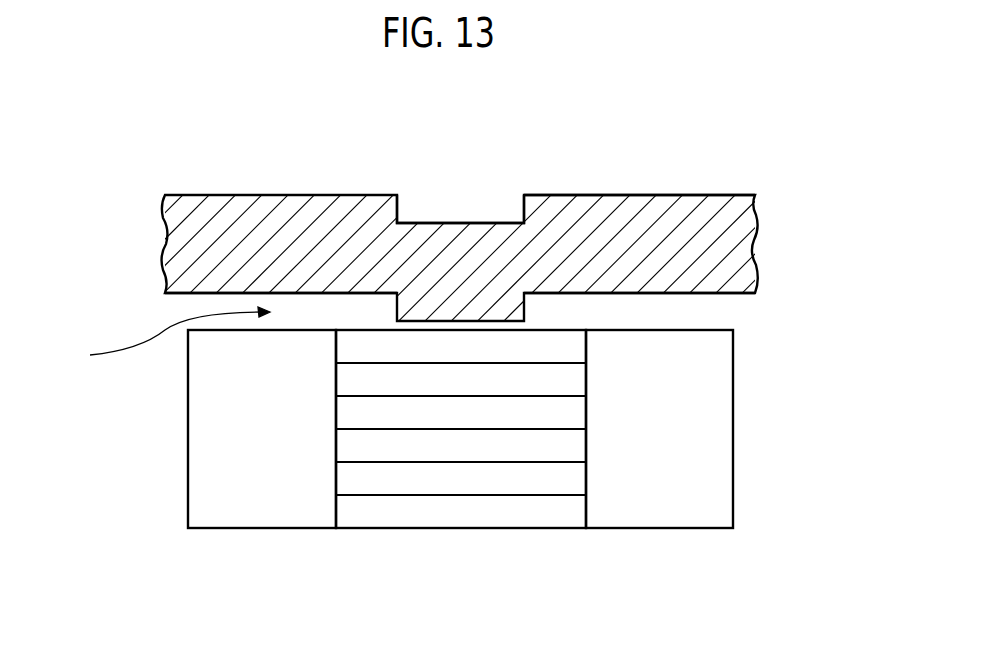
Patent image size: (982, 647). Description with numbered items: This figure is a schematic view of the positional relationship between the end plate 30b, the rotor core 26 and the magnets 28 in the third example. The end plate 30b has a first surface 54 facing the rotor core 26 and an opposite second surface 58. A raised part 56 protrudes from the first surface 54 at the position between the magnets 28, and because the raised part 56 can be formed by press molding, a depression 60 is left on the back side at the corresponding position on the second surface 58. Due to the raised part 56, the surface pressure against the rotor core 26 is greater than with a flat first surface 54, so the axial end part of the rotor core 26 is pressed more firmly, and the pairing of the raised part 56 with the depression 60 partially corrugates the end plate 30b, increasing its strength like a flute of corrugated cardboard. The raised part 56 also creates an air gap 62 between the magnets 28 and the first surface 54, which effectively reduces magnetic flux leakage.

The end plate 30b is at (215, 172).
The depression 60 is at (450, 222).
The second surface 58 is at (692, 194).
The first surface 54 is at (177, 293).
The raised part 56 is at (525, 312).
The air gap 62 is at (165, 340).
The magnet 28 is at (200, 434).
The rotor core 26 is at (500, 515).